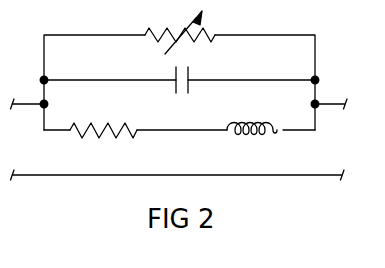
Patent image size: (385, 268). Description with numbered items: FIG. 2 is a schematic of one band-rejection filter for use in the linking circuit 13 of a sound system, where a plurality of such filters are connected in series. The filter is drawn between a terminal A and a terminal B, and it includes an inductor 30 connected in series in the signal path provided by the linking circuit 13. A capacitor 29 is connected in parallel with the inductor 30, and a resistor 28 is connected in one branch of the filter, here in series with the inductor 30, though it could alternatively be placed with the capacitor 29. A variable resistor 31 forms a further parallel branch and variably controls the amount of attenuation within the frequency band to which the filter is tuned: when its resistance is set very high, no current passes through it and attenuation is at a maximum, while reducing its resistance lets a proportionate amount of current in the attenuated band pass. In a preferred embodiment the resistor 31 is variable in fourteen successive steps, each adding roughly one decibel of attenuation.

The terminal A is at (24, 103).
The terminal B is at (80, 175).
The linking circuit 13 is at (338, 92).
The resistor 28 is at (98, 125).
The capacitor 29 is at (190, 85).
The inductor 30 is at (280, 138).
The variable resistor 31 is at (187, 40).